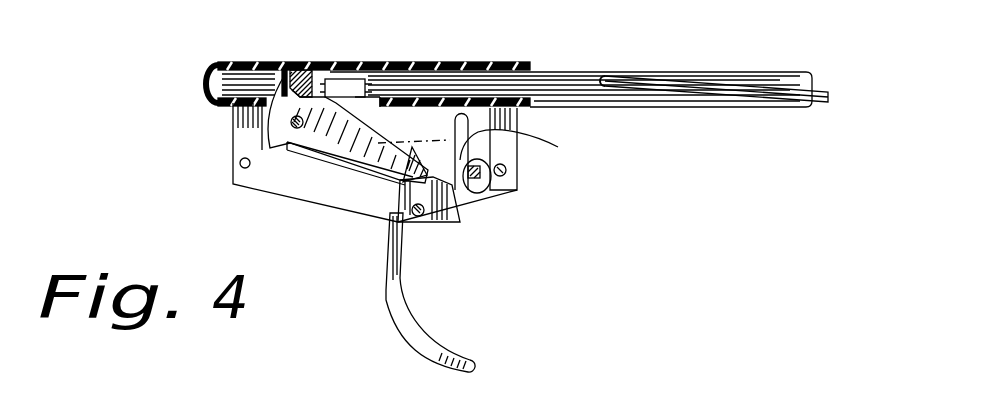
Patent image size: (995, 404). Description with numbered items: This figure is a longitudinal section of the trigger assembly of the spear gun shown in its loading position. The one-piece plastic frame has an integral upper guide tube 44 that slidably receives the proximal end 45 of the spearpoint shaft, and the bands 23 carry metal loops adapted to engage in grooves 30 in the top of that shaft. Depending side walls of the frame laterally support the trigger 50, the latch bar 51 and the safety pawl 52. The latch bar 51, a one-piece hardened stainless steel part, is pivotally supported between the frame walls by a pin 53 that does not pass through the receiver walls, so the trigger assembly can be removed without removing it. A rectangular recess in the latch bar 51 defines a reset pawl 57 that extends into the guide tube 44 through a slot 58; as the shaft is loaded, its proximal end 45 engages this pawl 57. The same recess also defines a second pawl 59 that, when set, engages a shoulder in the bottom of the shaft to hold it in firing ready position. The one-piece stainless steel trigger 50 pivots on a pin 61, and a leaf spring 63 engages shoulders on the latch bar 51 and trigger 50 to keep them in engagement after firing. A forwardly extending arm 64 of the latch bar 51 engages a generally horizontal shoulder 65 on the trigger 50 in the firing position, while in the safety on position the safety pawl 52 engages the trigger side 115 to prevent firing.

The bands 23 is at (722, 86).
The grooves 30 is at (606, 75).
The upper guide tube 44 is at (360, 80).
The proximal end 45 is at (477, 82).
The trigger 50 is at (384, 296).
The latch bar 51 is at (300, 128).
The safety pawl 52 is at (453, 190).
The pin 53 is at (290, 122).
The reset pawl 57 is at (283, 77).
The slot 58 is at (360, 82).
The second pawl 59 is at (335, 80).
The pin 61 is at (423, 215).
The leaf spring 63 is at (342, 147).
The forwardly extending arm 64 is at (388, 168).
The shoulder 65 is at (455, 200).
The trigger side 115 is at (558, 147).